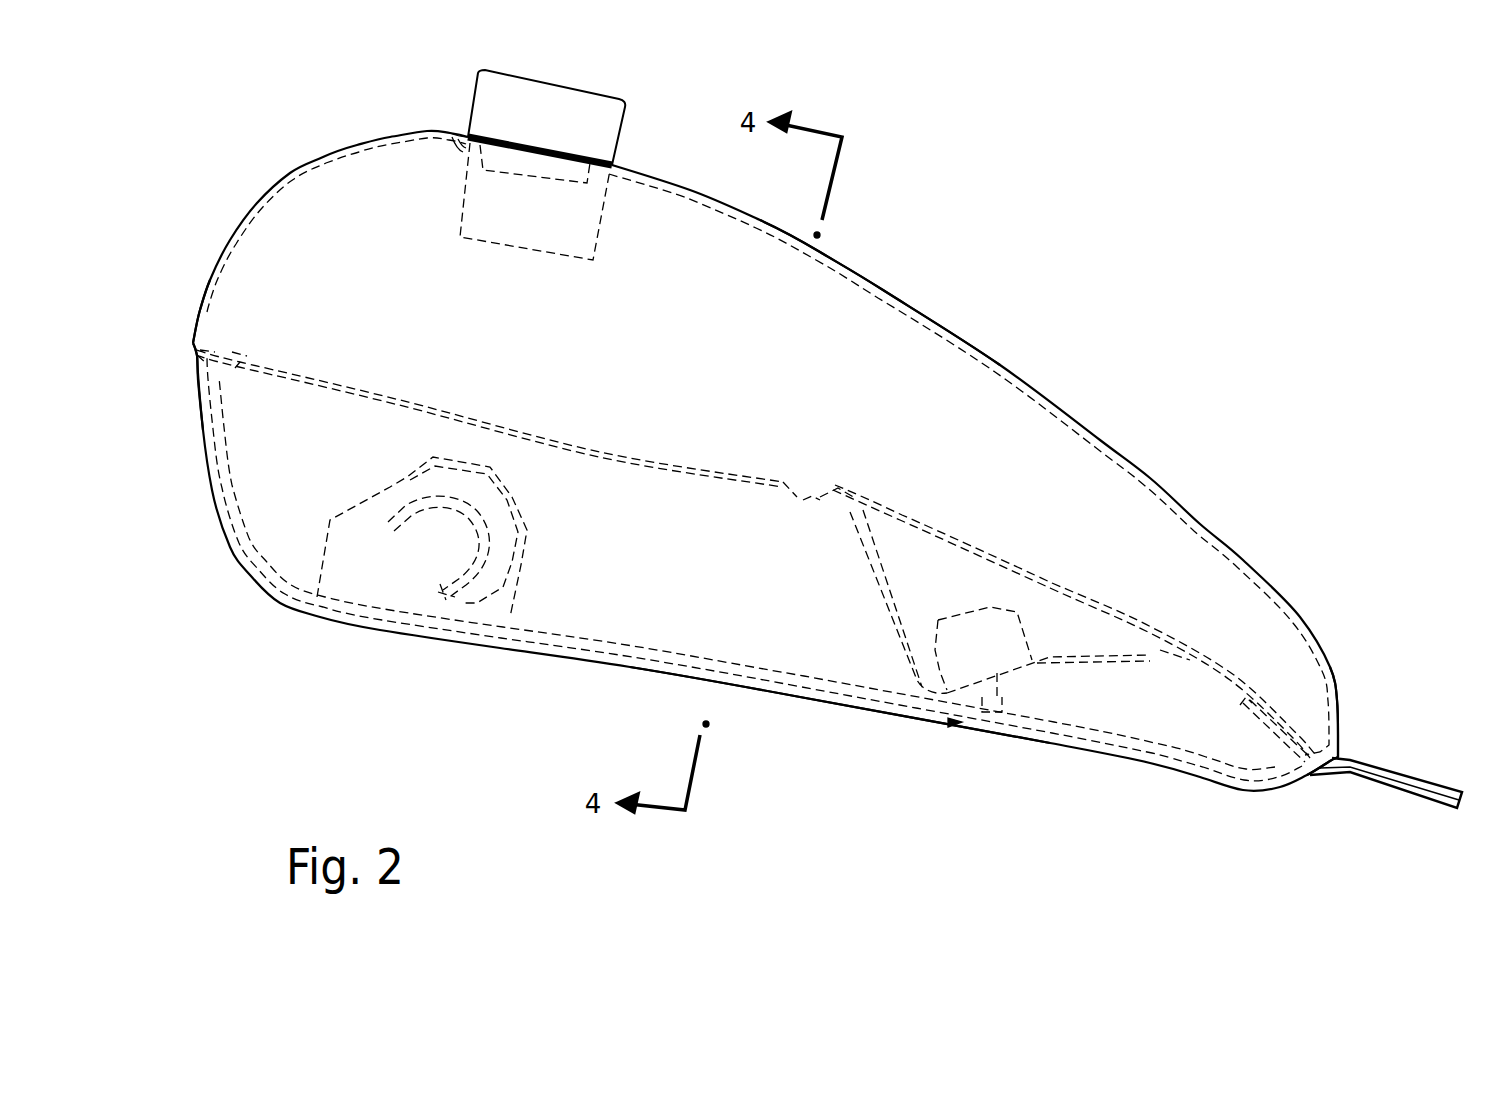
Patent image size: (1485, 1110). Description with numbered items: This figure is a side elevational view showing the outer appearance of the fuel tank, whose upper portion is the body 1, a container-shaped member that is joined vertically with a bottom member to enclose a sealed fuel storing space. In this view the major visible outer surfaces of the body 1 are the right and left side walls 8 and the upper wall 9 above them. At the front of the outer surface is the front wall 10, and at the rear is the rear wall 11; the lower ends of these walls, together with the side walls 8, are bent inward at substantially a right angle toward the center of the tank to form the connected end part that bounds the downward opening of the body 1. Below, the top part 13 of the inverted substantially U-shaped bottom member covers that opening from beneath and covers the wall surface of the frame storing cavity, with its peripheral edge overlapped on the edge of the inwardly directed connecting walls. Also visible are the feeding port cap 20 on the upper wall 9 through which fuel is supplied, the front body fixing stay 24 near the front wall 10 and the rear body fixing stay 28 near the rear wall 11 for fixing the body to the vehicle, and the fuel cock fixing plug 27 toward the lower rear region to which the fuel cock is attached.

The body 1 is at (992, 302).
The side wall 8 is at (803, 635).
The upper wall 9 is at (883, 290).
The front wall 10 is at (197, 325).
The rear wall 11 is at (1339, 735).
The top part 13 is at (665, 470).
The feeding port cap 20 is at (563, 87).
The front body fixing stay 24 is at (437, 597).
The fuel cock fixing plug 27 is at (983, 723).
The rear body fixing stay 28 is at (1382, 767).